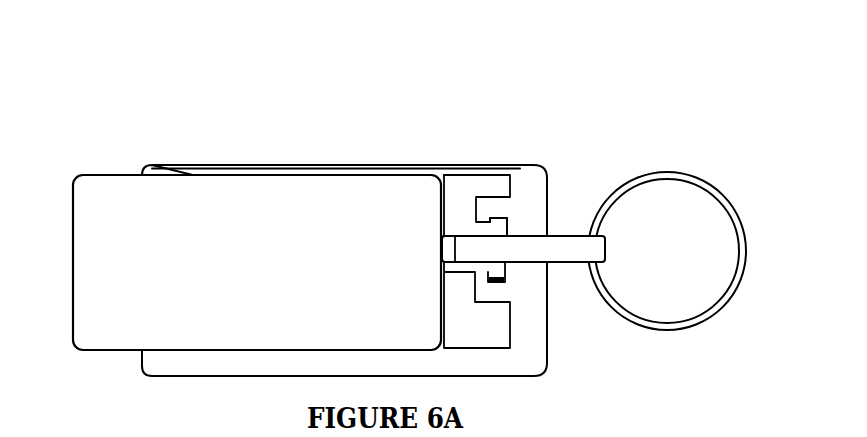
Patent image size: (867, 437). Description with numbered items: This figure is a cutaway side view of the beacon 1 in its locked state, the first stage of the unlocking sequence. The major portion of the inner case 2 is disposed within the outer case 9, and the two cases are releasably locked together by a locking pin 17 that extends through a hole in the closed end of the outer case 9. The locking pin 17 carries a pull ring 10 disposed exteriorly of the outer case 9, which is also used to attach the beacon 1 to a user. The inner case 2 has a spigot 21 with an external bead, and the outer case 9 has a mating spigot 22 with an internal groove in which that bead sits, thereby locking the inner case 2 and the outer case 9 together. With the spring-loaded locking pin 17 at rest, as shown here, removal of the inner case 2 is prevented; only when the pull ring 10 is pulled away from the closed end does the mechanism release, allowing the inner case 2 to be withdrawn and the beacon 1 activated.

The beacon 1 is at (587, 102).
The inner case 2 is at (73, 303).
The outer case 9 is at (547, 353).
The pull ring 10 is at (733, 210).
The locking pin 17 is at (556, 233).
The spigot 21 is at (499, 276).
The mating spigot 22 is at (480, 214).